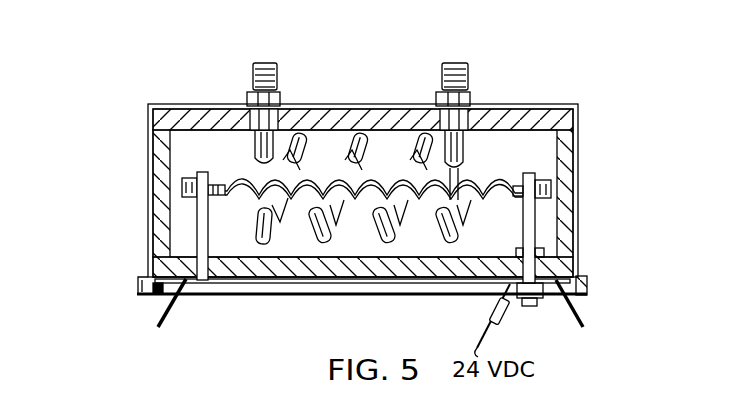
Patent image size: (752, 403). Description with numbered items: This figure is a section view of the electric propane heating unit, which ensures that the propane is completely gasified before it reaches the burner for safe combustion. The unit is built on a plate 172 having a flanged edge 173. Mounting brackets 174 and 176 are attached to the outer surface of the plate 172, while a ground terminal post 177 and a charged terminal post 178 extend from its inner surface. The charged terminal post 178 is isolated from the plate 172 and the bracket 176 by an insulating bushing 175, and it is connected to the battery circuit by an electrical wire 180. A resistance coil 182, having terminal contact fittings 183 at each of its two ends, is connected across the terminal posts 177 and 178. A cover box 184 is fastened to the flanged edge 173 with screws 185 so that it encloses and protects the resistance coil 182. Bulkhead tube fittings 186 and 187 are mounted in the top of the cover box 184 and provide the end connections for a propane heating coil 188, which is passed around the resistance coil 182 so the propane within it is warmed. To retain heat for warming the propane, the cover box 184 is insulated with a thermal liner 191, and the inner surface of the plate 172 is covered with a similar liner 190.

The plate 172 is at (373, 281).
The flanged edge 173 is at (460, 295).
The mounting bracket 174 is at (162, 316).
The insulating bushing 175 is at (536, 247).
The mounting bracket 176 is at (581, 308).
The ground terminal post 177 is at (195, 228).
The charged terminal post 178 is at (537, 223).
The electrical wire 180 is at (488, 340).
The resistance coil 182 is at (490, 167).
The terminal contact fittings 183 is at (183, 185).
The cover box 184 is at (147, 140).
The screws 185 is at (585, 287).
The bulkhead tube fitting 186 is at (248, 100).
The bulkhead tube fitting 187 is at (463, 73).
The propane heating coil 188 is at (302, 150).
The liner 190 is at (295, 262).
The thermal liner 191 is at (390, 120).